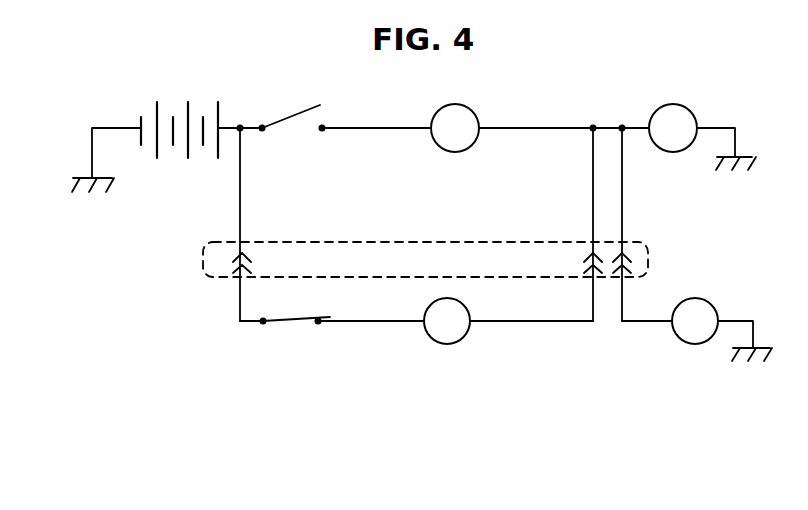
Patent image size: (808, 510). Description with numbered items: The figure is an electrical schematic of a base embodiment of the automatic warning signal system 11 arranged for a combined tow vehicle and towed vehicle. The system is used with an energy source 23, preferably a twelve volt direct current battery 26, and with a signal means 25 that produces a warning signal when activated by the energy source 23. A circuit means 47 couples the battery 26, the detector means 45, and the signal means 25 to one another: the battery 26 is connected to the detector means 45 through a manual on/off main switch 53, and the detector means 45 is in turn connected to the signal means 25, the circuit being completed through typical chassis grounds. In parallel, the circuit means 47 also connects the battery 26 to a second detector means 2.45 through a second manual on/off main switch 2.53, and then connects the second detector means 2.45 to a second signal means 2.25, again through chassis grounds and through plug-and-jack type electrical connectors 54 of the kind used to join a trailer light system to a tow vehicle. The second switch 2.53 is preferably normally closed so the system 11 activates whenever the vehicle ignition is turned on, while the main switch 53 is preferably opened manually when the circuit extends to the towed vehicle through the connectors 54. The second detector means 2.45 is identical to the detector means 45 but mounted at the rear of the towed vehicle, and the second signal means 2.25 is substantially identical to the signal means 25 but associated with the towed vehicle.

The automatic warning signal system 11 is at (749, 43).
The energy source 23 is at (188, 86).
The battery 26 is at (217, 148).
The manual on/off main switch 53 is at (297, 113).
The detector means 45 is at (455, 106).
The signal means 25 is at (673, 106).
The circuit means 47 is at (617, 378).
The electrical connectors 54 is at (200, 260).
The second manual on/off main switch 2.53 is at (297, 323).
The second detector means 2.45 is at (445, 344).
The second signal means 2.25 is at (700, 302).